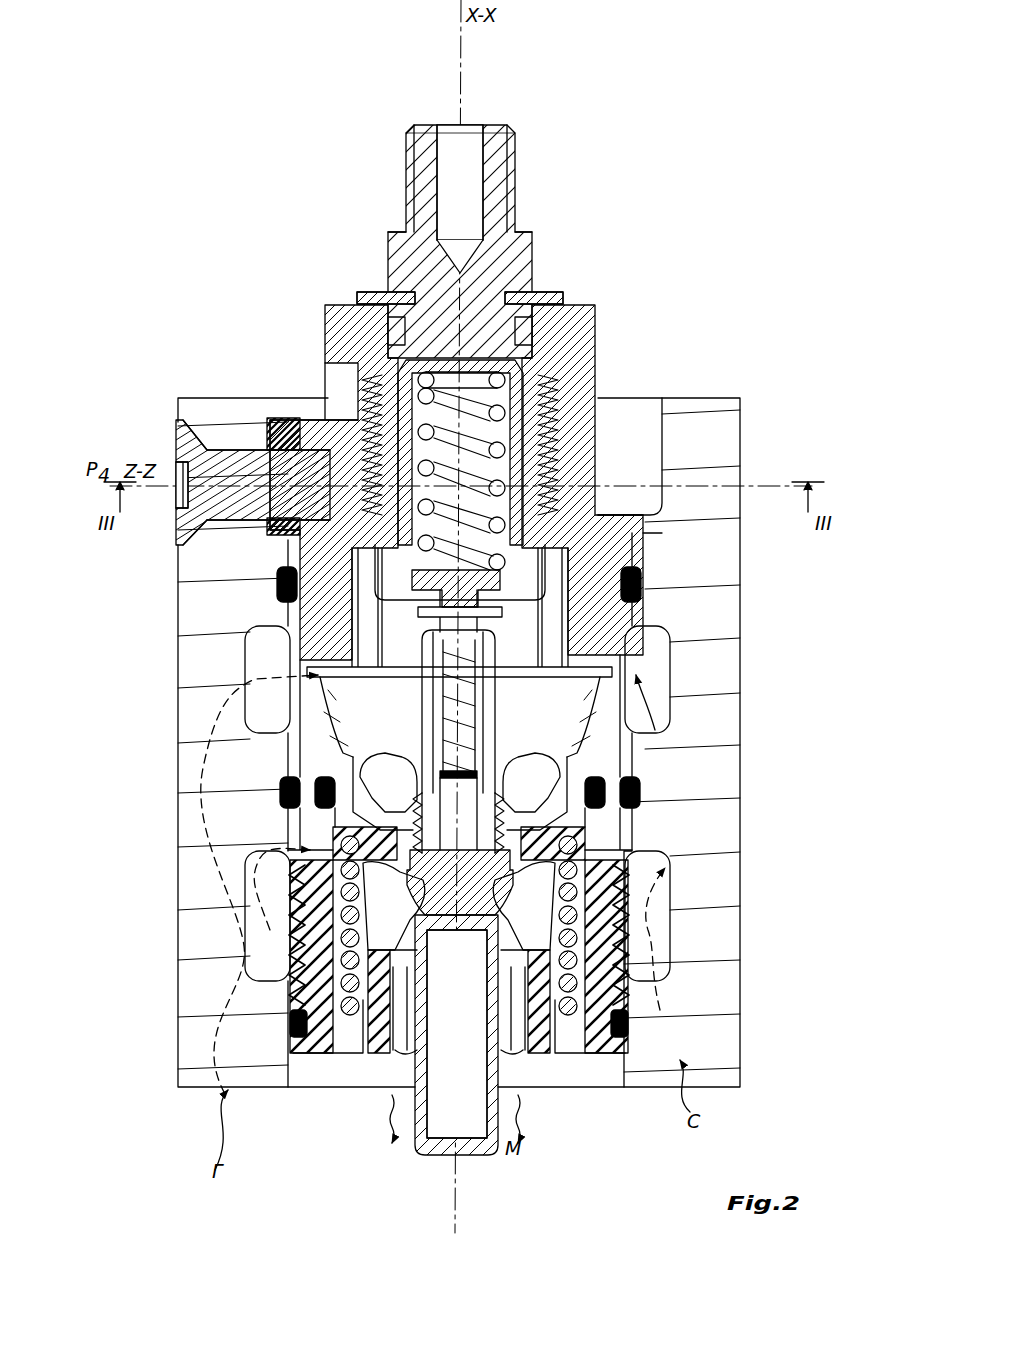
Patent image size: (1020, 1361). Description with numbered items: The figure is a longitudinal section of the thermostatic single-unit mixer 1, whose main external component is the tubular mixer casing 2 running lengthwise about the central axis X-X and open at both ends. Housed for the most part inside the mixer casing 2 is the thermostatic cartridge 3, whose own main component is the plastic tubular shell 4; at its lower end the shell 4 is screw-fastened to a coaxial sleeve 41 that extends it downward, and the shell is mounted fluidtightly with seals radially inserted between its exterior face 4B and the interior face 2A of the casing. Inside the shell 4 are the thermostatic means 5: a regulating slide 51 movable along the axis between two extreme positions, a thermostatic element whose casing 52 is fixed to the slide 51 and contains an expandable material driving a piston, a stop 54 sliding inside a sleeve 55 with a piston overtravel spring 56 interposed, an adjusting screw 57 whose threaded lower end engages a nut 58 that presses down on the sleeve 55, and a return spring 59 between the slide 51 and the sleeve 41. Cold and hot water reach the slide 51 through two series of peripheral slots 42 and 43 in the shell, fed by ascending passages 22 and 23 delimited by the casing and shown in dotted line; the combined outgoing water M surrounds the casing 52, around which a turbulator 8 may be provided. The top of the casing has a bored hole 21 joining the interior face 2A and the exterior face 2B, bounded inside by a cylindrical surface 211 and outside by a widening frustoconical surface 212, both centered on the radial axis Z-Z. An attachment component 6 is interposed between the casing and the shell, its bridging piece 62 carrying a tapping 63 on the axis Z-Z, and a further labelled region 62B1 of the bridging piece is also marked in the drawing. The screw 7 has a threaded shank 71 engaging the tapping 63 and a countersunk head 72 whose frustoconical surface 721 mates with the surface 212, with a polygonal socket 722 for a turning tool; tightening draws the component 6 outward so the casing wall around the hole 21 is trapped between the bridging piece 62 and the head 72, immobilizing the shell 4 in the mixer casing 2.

The single-unit mixer 1 is at (380, 118).
The mixer casing 2 is at (200, 1087).
The interior face of the mixer casing 2A is at (646, 620).
The exterior face of the mixer casing 2B is at (744, 426).
The thermostatic cartridge 3 is at (430, 396).
The shell 4 is at (348, 296).
The exterior face of the shell 4B is at (648, 546).
The thermostatic means 5 is at (400, 226).
The attachment component 6 is at (293, 404).
The screw 7 is at (204, 534).
The turbulator 8 is at (372, 1050).
The bored hole 21 is at (148, 443).
The cylindrical surface 211 is at (184, 428).
The frustoconical surface 212 is at (172, 440).
The ascending passage 22 is at (210, 876).
The ascending passage 23 is at (676, 1045).
The sleeve 41 is at (595, 1050).
The peripheral slots 42 is at (645, 660).
The peripheral slots 43 is at (656, 840).
The regulating slide 51 is at (648, 770).
The casing of the thermostatic element 52 is at (463, 1157).
The stop 54 is at (500, 555).
The sleeve 55 is at (537, 470).
The piston overtravel spring 56 is at (598, 380).
The adjusting screw 57 is at (533, 238).
The nut 58 is at (545, 450).
The return spring 59 is at (548, 1040).
The bridging piece 62 is at (283, 432).
The seal rings 62B1 is at (258, 438).
The tapping 63 is at (275, 648).
The threaded shank 71 is at (270, 555).
The countersunk head 72 is at (232, 505).
The frustoconical surface 721 is at (268, 548).
The polygonal socket 722 is at (180, 496).